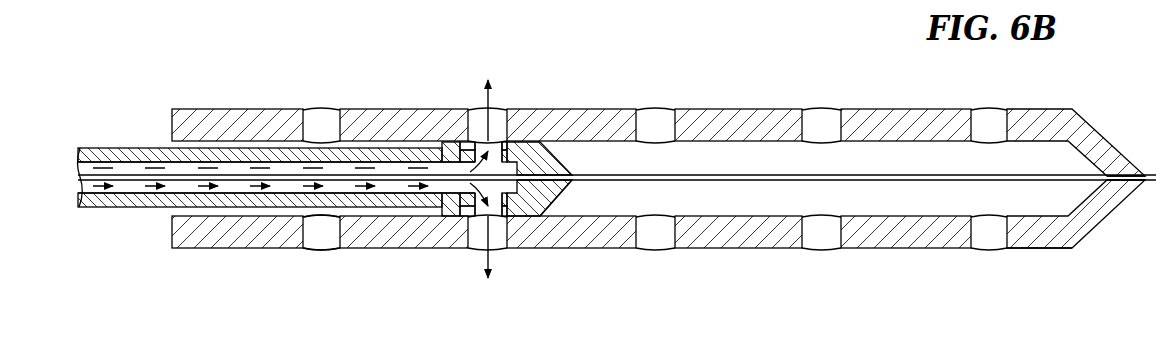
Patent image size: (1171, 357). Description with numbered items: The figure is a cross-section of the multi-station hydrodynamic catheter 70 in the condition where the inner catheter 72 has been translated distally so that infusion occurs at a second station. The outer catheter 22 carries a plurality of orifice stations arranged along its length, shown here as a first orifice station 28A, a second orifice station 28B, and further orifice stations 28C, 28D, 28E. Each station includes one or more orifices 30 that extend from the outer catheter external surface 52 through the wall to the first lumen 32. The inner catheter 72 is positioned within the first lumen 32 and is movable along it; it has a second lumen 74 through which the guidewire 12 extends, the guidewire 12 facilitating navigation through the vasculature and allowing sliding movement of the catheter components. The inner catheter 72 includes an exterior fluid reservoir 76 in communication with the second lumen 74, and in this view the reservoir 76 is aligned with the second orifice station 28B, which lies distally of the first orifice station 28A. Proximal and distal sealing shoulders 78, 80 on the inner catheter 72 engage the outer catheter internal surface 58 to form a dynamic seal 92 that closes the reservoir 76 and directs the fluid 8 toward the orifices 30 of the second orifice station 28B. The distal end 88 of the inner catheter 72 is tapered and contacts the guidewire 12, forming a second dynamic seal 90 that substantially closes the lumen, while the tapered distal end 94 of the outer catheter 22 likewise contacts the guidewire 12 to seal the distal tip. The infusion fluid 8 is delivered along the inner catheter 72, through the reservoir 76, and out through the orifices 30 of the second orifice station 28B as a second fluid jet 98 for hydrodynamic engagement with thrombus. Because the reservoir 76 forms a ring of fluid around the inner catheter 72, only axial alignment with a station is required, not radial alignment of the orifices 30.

The multi-station hydrodynamic catheter 70 is at (161, 73).
The inner catheter 72 is at (100, 155).
The fluid 8 is at (155, 170).
The second lumen 74 is at (132, 185).
The orifices 30 is at (320, 112).
The proximal sealing shoulder 78 is at (442, 148).
The dynamic seal 92 is at (453, 150).
The exterior fluid reservoir 76 is at (474, 165).
The second fluid jet 98 is at (489, 96).
The distal sealing shoulder 80 is at (527, 140).
The second dynamic seal 90 is at (572, 177).
The outer catheter internal surface 58 is at (733, 142).
The outer catheter external surface 52 is at (910, 108).
The first lumen 32 is at (1017, 160).
The distal end of the outer catheter 94 is at (1149, 158).
The guidewire 12 is at (870, 175).
The outer catheter 22 is at (1048, 248).
The first orifice station 28A is at (333, 258).
The second orifice station 28B is at (499, 258).
The orifice station 28C is at (654, 259).
The orifice station 28D is at (824, 259).
The orifice station 28E is at (993, 258).
The distal end of the inner catheter 88 is at (561, 204).